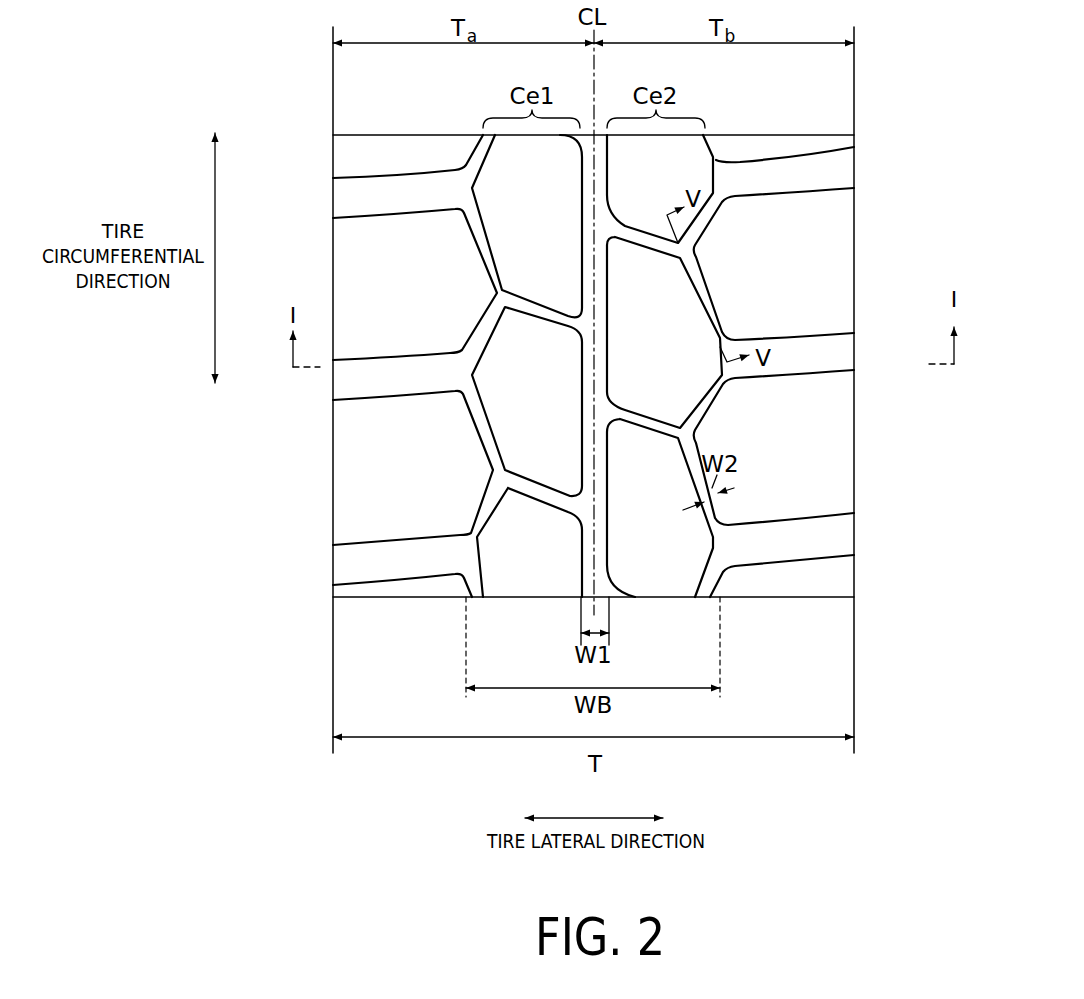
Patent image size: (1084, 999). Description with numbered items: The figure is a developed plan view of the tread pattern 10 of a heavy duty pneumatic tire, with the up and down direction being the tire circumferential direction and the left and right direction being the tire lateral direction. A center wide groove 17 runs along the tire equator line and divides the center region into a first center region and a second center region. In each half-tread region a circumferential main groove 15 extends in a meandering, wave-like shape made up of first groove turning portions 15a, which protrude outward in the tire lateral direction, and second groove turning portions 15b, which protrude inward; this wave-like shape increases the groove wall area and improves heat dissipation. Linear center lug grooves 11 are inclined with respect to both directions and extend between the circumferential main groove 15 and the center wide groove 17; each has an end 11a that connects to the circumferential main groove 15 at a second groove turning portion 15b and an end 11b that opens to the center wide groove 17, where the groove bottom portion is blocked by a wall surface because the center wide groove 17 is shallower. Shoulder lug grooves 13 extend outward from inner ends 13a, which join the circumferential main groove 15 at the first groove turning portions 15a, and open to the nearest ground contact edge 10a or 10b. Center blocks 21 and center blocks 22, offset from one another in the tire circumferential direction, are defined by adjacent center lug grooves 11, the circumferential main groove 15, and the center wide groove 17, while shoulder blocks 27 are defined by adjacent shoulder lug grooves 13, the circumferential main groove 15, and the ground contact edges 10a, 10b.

The tread pattern 10 is at (867, 47).
The ground contact edge 10a is at (333, 156).
The ground contact edge 10b is at (855, 137).
The center lug groove 11 is at (540, 322).
The end of center lug groove 11a is at (506, 312).
The end of center lug groove 11b is at (577, 328).
The shoulder lug groove 13 is at (333, 387).
The inner end of shoulder lug groove 13a is at (458, 182).
The circumferential main groove 15 is at (477, 598).
The first groove turning portion 15a is at (458, 208).
The second groove turning portion 15b is at (495, 298).
The center wide groove 17 is at (582, 190).
The center block 21 is at (523, 598).
The center block 22 is at (660, 598).
The shoulder block 27 is at (333, 462).